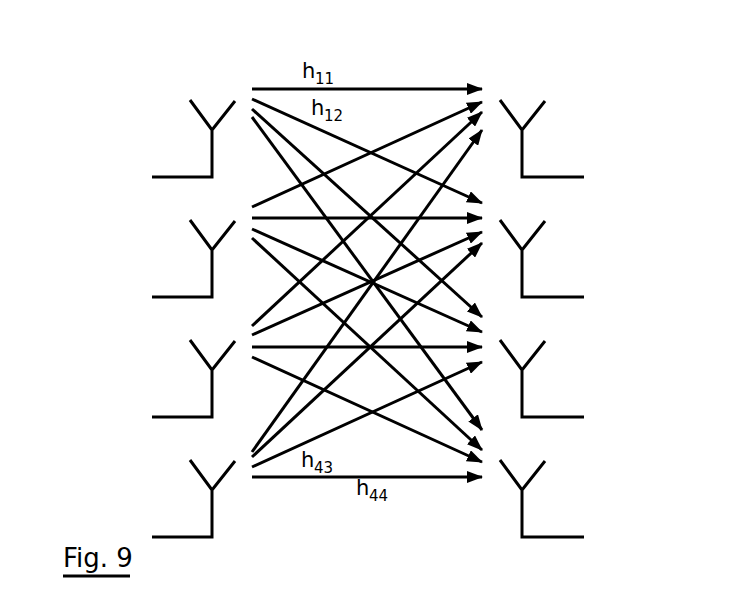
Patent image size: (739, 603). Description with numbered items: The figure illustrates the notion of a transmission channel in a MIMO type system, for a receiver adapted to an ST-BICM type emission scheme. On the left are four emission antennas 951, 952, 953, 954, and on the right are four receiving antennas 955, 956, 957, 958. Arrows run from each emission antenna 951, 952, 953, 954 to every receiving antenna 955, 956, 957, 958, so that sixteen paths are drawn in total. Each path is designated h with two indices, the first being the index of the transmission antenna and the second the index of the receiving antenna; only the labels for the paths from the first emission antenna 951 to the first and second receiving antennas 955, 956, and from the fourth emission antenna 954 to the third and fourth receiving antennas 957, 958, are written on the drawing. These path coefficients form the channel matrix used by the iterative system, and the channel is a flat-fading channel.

The emission antenna 951 is at (172, 176).
The emission antenna 952 is at (172, 296).
The emission antenna 953 is at (172, 416).
The emission antenna 954 is at (172, 536).
The receiving antenna 955 is at (555, 176).
The receiving antenna 956 is at (555, 296).
The receiving antenna 957 is at (555, 416).
The receiving antenna 958 is at (555, 536).